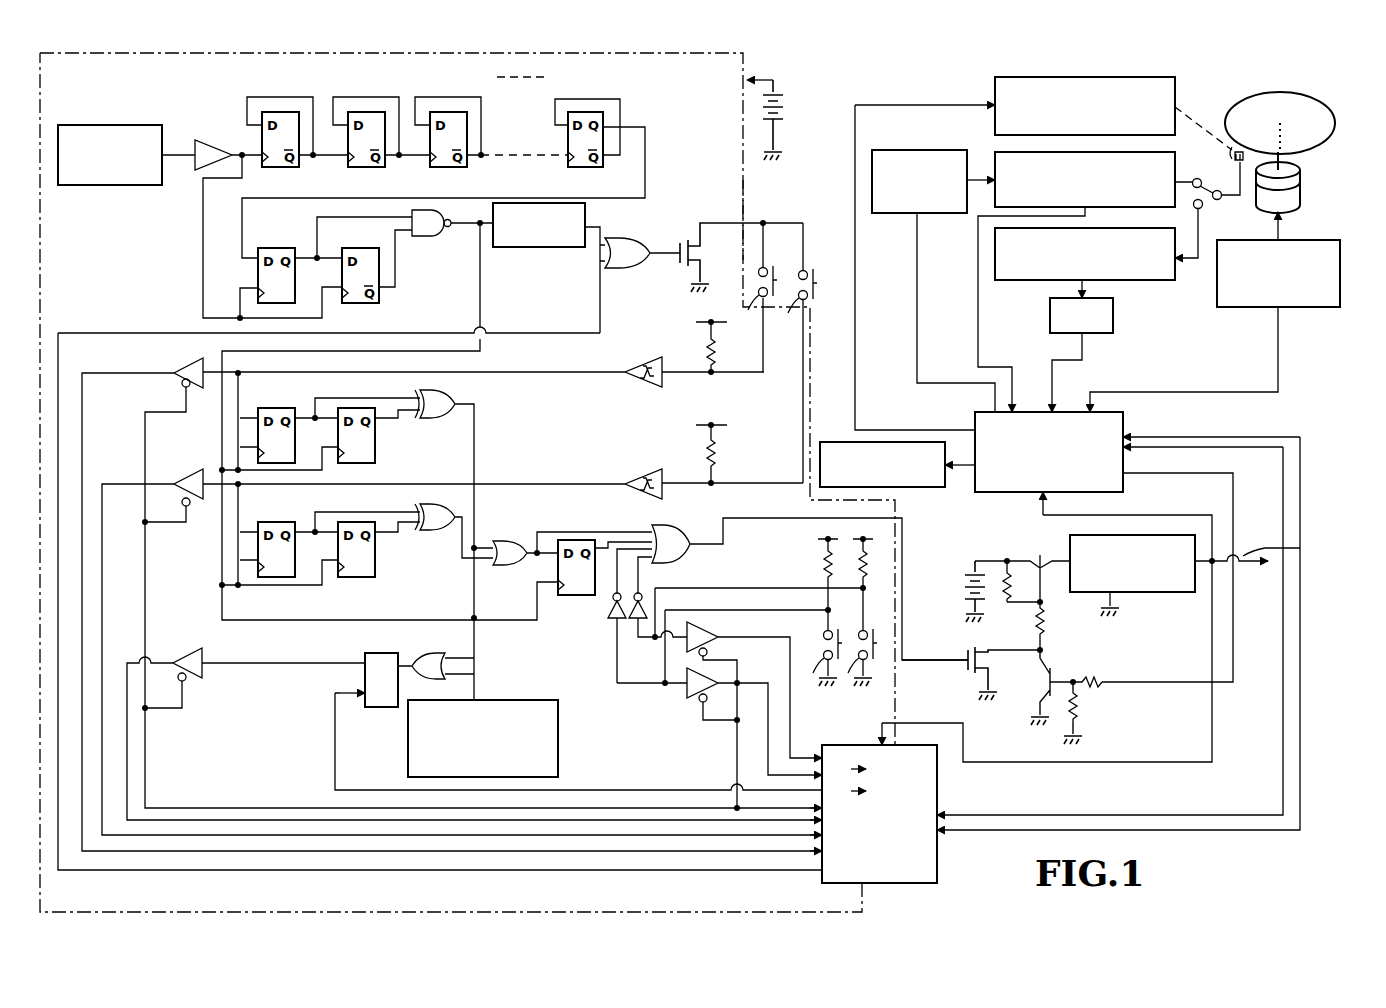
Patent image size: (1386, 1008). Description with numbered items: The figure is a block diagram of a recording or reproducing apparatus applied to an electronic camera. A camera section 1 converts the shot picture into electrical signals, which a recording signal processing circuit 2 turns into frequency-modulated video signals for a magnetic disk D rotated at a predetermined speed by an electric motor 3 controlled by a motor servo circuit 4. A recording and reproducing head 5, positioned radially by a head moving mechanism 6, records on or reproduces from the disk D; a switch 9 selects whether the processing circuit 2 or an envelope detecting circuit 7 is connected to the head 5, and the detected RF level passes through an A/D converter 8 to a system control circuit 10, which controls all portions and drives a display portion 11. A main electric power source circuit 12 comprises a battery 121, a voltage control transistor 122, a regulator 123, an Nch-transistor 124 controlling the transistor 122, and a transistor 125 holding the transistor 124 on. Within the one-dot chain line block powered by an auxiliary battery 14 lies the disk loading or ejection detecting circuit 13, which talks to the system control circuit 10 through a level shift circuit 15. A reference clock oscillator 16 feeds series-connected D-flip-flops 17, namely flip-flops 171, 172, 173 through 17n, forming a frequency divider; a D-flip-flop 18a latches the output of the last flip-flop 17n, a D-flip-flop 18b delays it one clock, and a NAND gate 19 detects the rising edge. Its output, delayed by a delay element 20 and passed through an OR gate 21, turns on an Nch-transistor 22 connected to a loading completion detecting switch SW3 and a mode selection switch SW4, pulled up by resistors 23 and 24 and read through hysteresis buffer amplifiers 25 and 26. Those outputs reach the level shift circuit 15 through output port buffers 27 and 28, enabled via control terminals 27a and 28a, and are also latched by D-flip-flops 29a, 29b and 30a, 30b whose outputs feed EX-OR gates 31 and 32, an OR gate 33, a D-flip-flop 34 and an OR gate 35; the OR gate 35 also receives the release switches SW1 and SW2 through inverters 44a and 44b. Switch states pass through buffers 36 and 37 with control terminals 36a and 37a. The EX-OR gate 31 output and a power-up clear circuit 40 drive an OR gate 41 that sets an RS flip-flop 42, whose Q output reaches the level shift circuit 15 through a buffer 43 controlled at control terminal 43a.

The camera section 1 is at (902, 150).
The recording signal processing circuit 2 is at (1174, 168).
The electric motor 3 is at (1302, 200).
The motor servo circuit 4 is at (1292, 310).
The recording and reproducing head 5 is at (1229, 158).
The head moving mechanism 6 is at (1175, 94).
The envelope detecting circuit 7 is at (1176, 282).
The A/D converter 8 is at (1113, 318).
The switch 9 is at (1203, 206).
The system control circuit 10 is at (1125, 418).
The display portion 11 is at (910, 489).
The main electric power source circuit 12 is at (1143, 630).
The disk loading or ejection detecting circuit 13 is at (746, 184).
The auxiliary battery 14 is at (790, 104).
The level shift circuit 15 is at (940, 848).
The reference clock oscillator 16 is at (124, 125).
The D-flip-flops 17 is at (443, 164).
The D-flip-flop 171 is at (268, 112).
The D-flip-flop 172 is at (357, 112).
The D-flip-flop 173 is at (440, 112).
The D-flip-flop 17n is at (580, 112).
The D-flip-flop 18a is at (272, 248).
The D-flip-flop 18b is at (352, 238).
The NAND gate 19 is at (430, 237).
The delay element 20 is at (555, 252).
The OR gate 21 is at (634, 272).
The Nch-transistor 22 is at (705, 252).
The pull-up resistor 23 is at (716, 348).
The pull-up resistor 24 is at (720, 455).
The buffer amplifier 25 is at (636, 382).
The buffer amplifier 26 is at (638, 474).
The buffer 27 is at (172, 366).
The control terminal 27a is at (181, 385).
The buffer 28 is at (190, 474).
The control terminal 28a is at (186, 506).
The D-flip-flop 29a is at (272, 408).
The D-flip-flop 29b is at (368, 438).
The D-flip-flop 30a is at (272, 522).
The D-flip-flop 30b is at (370, 552).
The EX-OR gate 31 is at (449, 417).
The EX-OR gate 32 is at (434, 530).
The OR gate 33 is at (499, 540).
The D-flip-flop 34 is at (574, 595).
The OR gate 35 is at (684, 560).
The buffer 36 is at (682, 692).
The control terminal 36a is at (700, 710).
The buffer 37 is at (705, 636).
The control terminal 37a is at (708, 652).
The power-up clear circuit 40 is at (500, 700).
The OR gate 41 is at (434, 650).
The RS flip-flop 42 is at (376, 715).
The buffer 43 is at (190, 644).
The control terminal 43a is at (188, 682).
The inverter 44a is at (612, 622).
The inverter 44b is at (640, 626).
The battery 121 is at (964, 578).
The voltage control transistor 122 is at (1030, 558).
The regulator 123 is at (1140, 596).
The Nch-transistor 124 is at (964, 676).
The transistor 125 is at (1052, 674).
The switch SW1 is at (817, 611).
The switch SW2 is at (856, 623).
The loading completion detecting switch SW3 is at (774, 269).
The mode selection switch SW4 is at (816, 271).
The magnetic disk D is at (1248, 94).